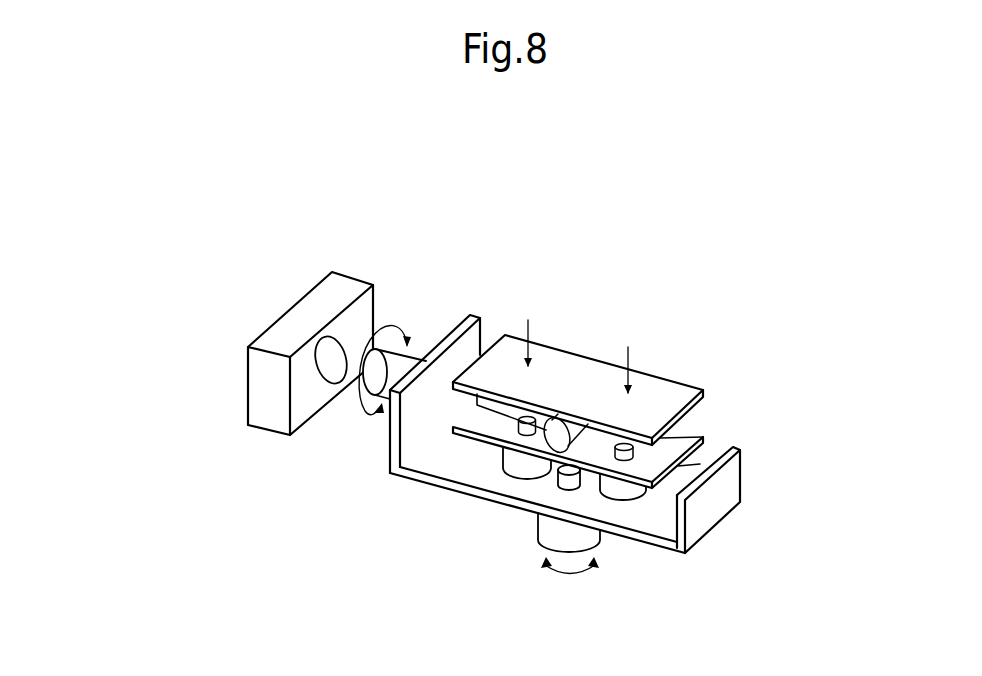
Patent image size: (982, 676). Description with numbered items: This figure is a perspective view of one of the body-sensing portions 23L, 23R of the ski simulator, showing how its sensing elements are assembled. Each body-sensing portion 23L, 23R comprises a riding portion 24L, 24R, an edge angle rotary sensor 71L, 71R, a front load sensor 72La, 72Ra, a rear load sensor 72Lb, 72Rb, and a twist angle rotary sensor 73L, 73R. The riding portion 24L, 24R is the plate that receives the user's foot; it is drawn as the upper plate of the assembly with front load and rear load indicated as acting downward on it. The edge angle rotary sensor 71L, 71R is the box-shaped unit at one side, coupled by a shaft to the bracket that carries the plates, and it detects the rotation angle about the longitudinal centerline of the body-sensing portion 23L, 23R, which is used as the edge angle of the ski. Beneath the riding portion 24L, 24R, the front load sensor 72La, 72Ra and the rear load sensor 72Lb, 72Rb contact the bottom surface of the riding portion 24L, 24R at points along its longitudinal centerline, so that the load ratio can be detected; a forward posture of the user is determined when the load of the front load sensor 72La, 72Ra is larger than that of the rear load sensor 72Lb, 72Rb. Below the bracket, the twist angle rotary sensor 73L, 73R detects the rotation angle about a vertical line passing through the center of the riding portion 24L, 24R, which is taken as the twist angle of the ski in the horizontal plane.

The body-sensing portion 23L is at (564, 395).
The body-sensing portion 23R is at (564, 395).
The riding portion 24L is at (673, 371).
The riding portion 24R is at (688, 390).
The edge angle rotary sensor 71L is at (256, 349).
The edge angle rotary sensor 71R is at (307, 316).
The front load sensor 72La is at (407, 507).
The front load sensor 72Ra is at (518, 460).
The rear load sensor 72Lb is at (733, 550).
The rear load sensor 72Rb is at (623, 492).
The twist angle rotary sensor 73L is at (506, 577).
The twist angle rotary sensor 73R is at (506, 577).